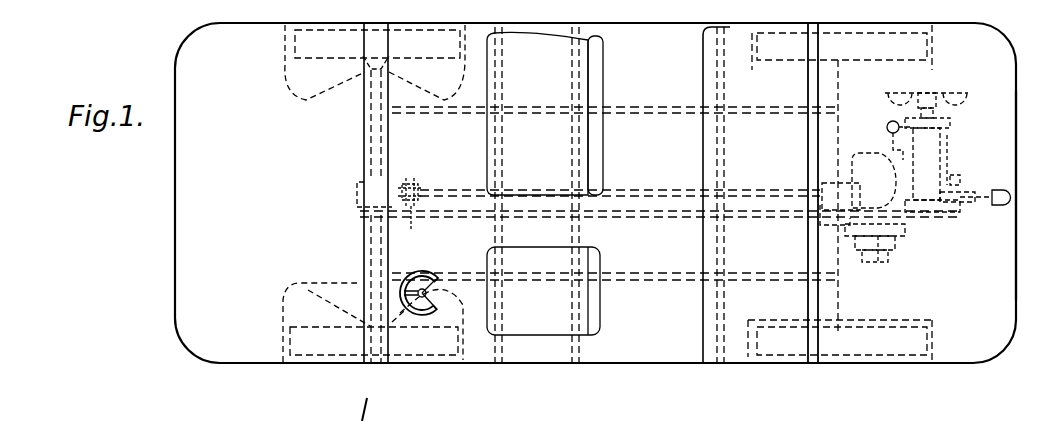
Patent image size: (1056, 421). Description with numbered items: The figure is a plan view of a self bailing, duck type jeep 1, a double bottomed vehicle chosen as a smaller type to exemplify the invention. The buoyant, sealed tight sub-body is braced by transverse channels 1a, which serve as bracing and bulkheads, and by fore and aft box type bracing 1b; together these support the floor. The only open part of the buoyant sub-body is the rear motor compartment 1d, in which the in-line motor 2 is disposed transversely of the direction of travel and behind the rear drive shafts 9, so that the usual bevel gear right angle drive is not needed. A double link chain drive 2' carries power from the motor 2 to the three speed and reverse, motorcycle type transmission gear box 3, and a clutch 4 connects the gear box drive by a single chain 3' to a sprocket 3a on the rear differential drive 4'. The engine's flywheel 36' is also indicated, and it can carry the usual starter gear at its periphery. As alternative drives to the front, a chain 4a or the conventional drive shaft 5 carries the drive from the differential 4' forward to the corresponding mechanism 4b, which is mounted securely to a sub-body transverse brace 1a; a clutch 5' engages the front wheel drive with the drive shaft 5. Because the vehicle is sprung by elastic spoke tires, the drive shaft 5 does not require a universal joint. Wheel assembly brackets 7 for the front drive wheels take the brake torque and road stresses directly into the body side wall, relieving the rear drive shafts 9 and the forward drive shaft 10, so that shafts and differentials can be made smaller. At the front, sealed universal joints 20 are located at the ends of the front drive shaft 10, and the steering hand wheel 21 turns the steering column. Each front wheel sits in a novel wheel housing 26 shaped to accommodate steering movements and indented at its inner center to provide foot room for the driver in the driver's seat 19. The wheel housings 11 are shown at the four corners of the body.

The double bottomed duck-jeep 1 is at (189, 199).
The transverse channels 1a is at (389, 142).
The fore and aft box type bracing 1b is at (651, 113).
The rear motor compartment 1d is at (1008, 296).
The in-line motor 2 is at (932, 146).
The double link chain drive 2' is at (889, 249).
The transmission gear box 3 is at (874, 169).
The single chain 3' is at (879, 265).
The sprocket 3a is at (838, 223).
The clutch 4 is at (874, 265).
The rear differential drive 4' is at (820, 179).
The chain 4a is at (652, 220).
The corresponding mechanism 4b is at (380, 195).
The drive shaft 5 is at (620, 182).
The clutch 5' is at (419, 192).
The wheel assembly brackets 7 is at (360, 322).
The rear drive shafts 9 is at (846, 306).
The front drive shaft 10 is at (369, 146).
The wheel housings 11 is at (296, 48).
The driver's seat 19 is at (547, 328).
The universal joint 20 is at (384, 62).
The steering hand wheel 21 is at (433, 278).
The wheel housing 26 is at (290, 93).
The flywheel 36' is at (958, 221).